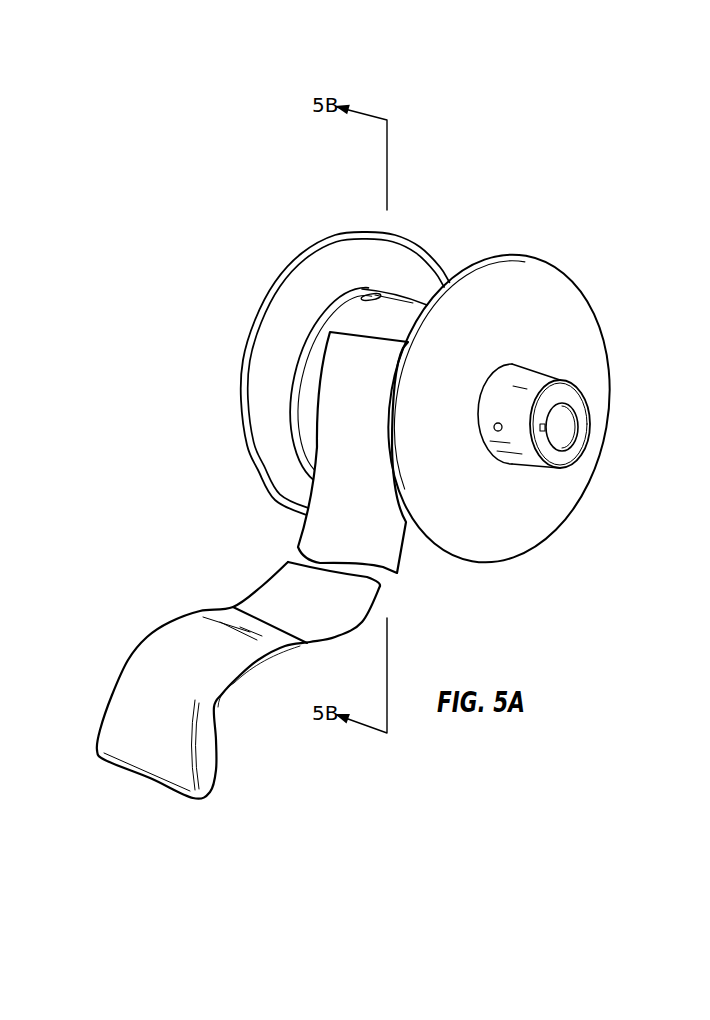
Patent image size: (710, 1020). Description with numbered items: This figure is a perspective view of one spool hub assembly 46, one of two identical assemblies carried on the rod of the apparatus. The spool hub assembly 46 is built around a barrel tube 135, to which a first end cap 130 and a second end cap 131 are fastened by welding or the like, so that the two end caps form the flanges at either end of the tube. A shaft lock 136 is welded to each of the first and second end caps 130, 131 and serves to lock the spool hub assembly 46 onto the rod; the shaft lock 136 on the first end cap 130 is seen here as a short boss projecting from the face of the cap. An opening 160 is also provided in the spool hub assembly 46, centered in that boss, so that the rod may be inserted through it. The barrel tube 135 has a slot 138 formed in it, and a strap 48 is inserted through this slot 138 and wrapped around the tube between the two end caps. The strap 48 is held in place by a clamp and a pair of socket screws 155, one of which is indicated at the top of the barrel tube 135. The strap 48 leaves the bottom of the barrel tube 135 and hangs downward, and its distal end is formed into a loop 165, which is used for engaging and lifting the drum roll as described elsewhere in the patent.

The spool hub assembly 46 is at (627, 340).
The strap 48 is at (265, 587).
The first end cap 130 is at (495, 545).
The second end cap 131 is at (258, 355).
The barrel tube 135 is at (326, 332).
The shaft lock 136 is at (519, 456).
The slot 138 is at (347, 318).
The socket screws 155 is at (378, 290).
The opening 160 is at (553, 420).
The loop 165 is at (202, 763).